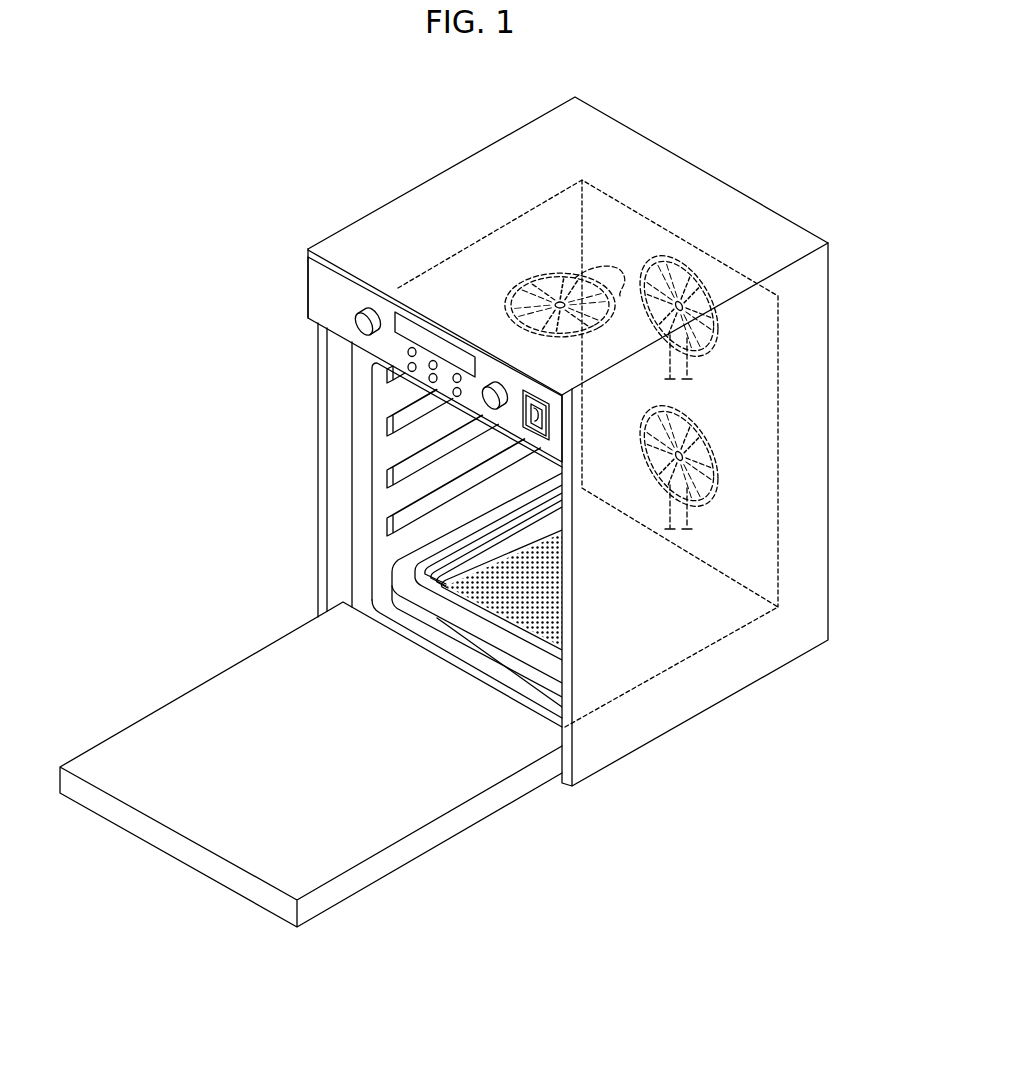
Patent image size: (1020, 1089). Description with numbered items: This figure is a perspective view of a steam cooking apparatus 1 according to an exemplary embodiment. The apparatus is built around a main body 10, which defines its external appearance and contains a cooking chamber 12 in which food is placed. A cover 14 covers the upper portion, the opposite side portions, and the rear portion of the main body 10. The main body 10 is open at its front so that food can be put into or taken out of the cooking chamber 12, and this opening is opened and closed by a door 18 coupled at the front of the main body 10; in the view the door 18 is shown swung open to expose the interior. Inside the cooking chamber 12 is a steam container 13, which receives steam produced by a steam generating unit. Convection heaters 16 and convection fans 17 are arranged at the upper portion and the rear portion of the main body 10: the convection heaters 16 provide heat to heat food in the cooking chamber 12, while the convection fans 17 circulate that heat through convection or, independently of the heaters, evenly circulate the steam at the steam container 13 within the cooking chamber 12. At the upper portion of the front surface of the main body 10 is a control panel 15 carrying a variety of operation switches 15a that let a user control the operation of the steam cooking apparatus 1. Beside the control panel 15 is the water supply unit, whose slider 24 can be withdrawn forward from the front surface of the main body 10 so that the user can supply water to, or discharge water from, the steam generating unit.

The steam cooking apparatus 1 is at (431, 74).
The main body 10 is at (306, 423).
The cooking chamber 12 is at (404, 437).
The steam container 13 is at (437, 600).
The cover 14 is at (397, 222).
The control panel 15 is at (318, 297).
The operation switches 15a is at (410, 352).
The convection heaters 16 is at (540, 275).
The convection fans 17 is at (530, 300).
The door 18 is at (374, 873).
The slider 24 is at (548, 422).